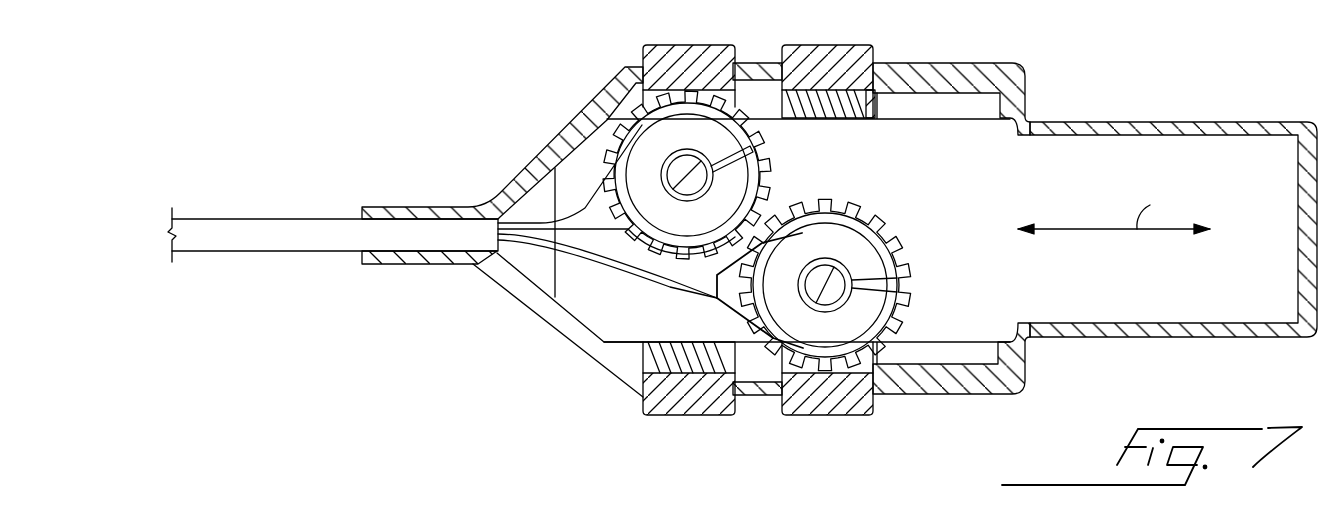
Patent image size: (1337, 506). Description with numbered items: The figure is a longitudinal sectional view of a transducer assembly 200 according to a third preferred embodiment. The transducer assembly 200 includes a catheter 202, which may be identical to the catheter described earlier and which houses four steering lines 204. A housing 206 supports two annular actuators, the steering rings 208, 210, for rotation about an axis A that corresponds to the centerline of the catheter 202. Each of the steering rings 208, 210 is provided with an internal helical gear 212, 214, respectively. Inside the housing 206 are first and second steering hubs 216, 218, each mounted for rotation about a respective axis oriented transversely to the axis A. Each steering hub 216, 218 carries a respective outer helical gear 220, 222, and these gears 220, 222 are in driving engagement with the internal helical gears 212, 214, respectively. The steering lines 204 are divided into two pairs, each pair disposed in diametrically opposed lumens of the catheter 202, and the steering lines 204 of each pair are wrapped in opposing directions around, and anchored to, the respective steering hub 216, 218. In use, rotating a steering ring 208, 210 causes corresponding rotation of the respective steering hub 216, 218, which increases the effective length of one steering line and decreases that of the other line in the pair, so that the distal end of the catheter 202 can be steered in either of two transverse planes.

The transducer assembly 200 is at (496, 352).
The catheter 202 is at (247, 253).
The steering lines 204 is at (525, 224).
The housing 206 is at (1020, 93).
The steering ring 208 is at (668, 416).
The steering ring 210 is at (786, 416).
The internal helical gear 212 is at (625, 371).
The internal helical gear 214 is at (858, 105).
The first steering hub 216 is at (738, 186).
The second steering hub 218 is at (857, 247).
The outer helical gear 220 is at (770, 152).
The outer helical gear 222 is at (895, 235).